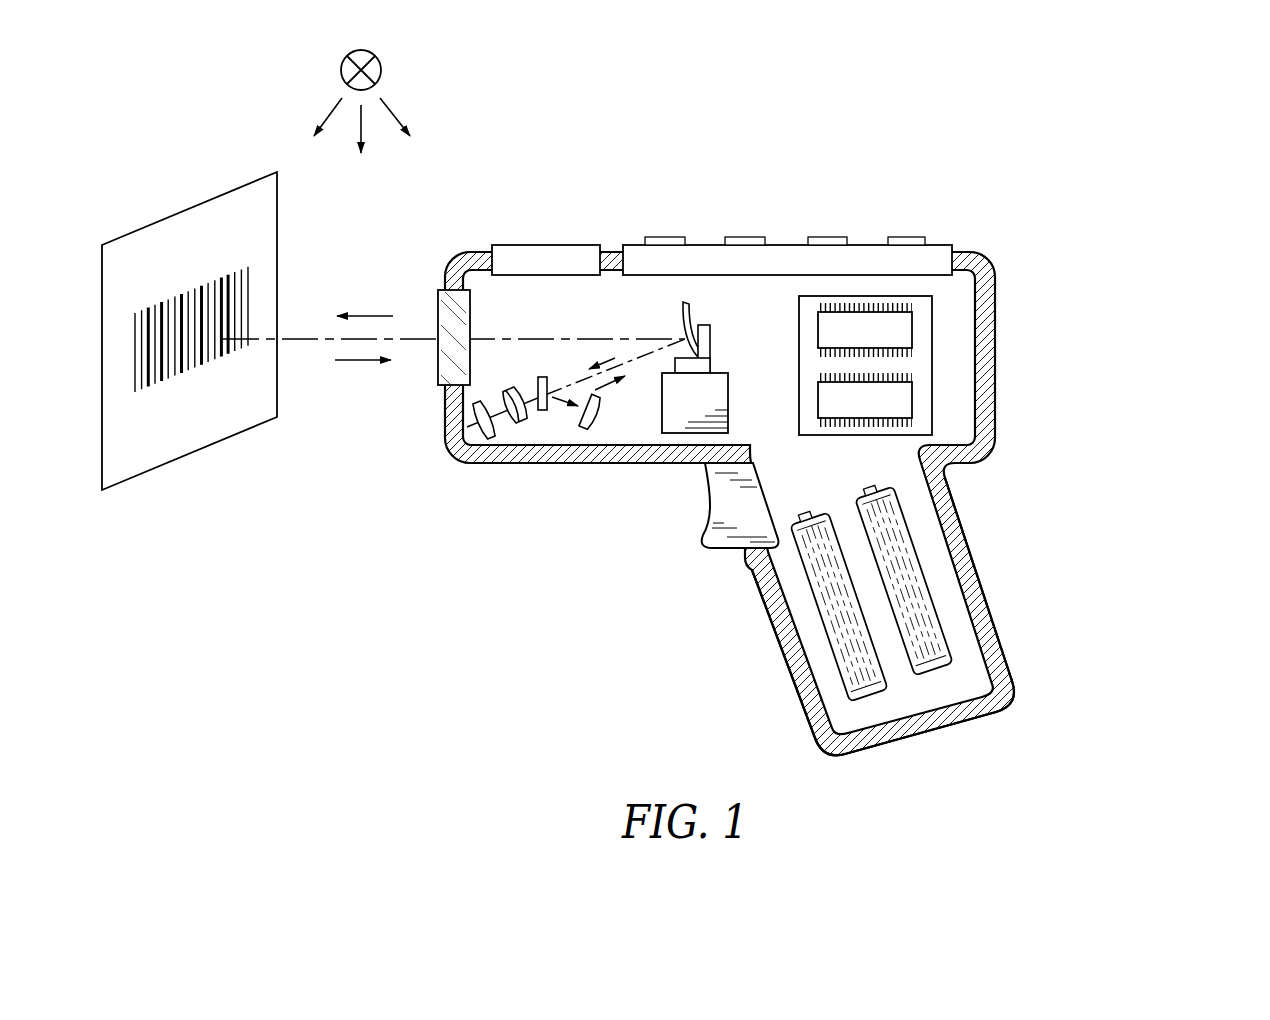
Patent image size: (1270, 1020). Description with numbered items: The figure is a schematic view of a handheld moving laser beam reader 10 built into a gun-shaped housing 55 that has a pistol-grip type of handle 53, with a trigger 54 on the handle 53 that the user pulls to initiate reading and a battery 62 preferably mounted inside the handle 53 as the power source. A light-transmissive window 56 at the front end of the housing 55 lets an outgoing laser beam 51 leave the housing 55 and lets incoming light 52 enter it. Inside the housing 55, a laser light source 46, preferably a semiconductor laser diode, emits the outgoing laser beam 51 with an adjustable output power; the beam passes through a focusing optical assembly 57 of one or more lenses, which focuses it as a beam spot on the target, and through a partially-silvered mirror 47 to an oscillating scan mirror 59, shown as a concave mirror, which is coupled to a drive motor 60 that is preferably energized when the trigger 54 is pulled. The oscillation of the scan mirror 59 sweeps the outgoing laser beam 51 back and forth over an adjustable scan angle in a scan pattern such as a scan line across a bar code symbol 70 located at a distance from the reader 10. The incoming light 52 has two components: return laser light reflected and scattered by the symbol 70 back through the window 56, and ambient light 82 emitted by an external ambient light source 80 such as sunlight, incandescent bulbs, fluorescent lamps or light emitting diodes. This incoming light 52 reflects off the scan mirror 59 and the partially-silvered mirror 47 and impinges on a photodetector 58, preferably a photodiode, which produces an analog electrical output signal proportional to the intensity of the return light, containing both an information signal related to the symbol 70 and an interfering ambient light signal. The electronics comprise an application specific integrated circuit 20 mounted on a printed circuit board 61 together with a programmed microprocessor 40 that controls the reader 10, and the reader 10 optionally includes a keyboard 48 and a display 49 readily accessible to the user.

The moving laser beam reader 10 is at (817, 487).
The application specific integrated circuit 20 is at (903, 398).
The microprocessor 40 is at (900, 328).
The laser light source 46 is at (478, 431).
The partially-silvered mirror 47 is at (542, 412).
The keyboard 48 is at (875, 252).
The display 49 is at (520, 250).
The outgoing laser beam 51 is at (374, 315).
The incoming light 52 is at (353, 362).
The handle 53 is at (781, 652).
The trigger 54 is at (717, 552).
The housing 55 is at (992, 441).
The light-transmissive window 56 is at (438, 300).
The focusing optical assembly 57 is at (522, 422).
The photodetector 58 is at (596, 425).
The oscillating scan mirror 59 is at (676, 320).
The drive motor 60 is at (673, 423).
The printed circuit board 61 is at (932, 365).
The battery 62 is at (935, 678).
The bar code symbol 70 is at (235, 270).
The ambient light source 80 is at (379, 74).
The ambient light 82 is at (366, 132).